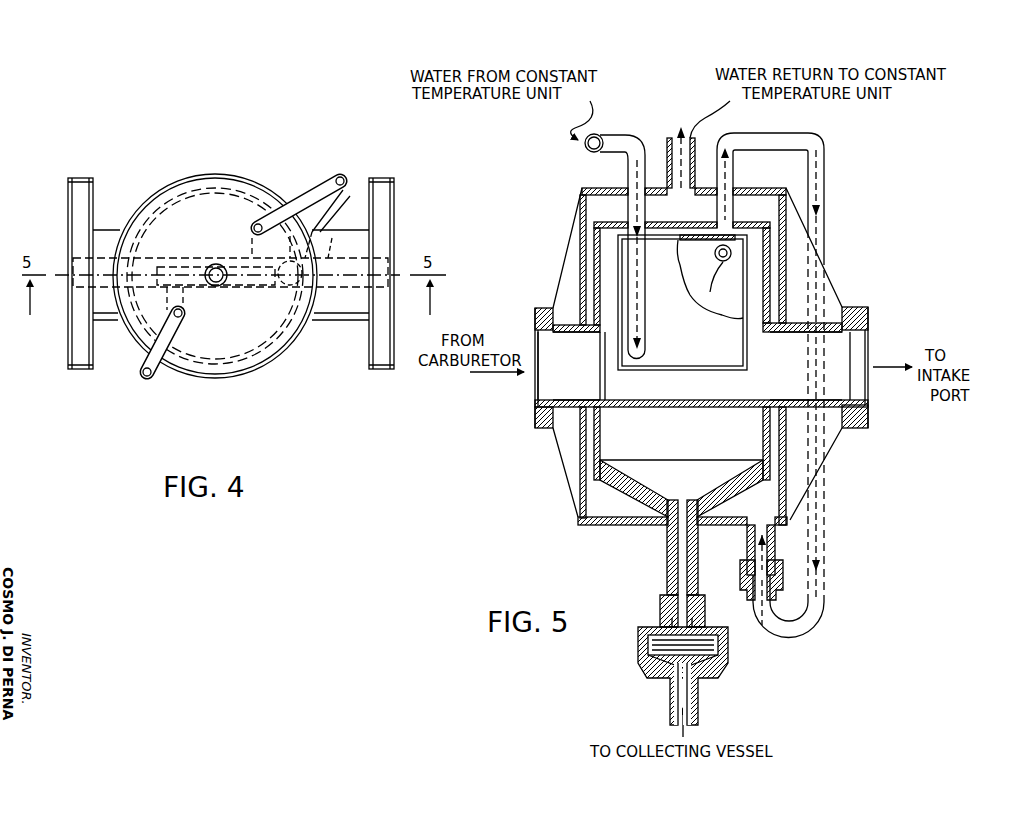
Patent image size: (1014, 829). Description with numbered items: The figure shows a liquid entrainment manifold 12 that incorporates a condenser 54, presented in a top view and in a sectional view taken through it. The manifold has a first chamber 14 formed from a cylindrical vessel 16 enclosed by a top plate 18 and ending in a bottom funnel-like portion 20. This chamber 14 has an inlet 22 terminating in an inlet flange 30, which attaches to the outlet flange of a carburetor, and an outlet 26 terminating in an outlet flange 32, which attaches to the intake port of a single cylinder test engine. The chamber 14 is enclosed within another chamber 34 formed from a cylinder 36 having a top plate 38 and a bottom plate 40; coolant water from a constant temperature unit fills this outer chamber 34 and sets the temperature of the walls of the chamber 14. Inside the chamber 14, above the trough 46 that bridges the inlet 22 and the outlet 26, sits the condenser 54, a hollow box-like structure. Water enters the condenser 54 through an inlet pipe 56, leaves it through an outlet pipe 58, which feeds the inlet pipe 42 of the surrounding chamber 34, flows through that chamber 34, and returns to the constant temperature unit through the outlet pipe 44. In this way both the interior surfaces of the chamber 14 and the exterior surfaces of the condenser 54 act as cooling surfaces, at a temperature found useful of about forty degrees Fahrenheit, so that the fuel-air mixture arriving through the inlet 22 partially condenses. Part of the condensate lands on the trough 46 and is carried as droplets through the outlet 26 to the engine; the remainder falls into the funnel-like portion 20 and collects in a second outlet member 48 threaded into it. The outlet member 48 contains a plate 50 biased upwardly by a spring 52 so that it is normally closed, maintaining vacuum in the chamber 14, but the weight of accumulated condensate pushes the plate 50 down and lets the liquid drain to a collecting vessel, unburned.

In FIG. 4, the liquid entrainment manifold 12 is at (205, 386).
In FIG. 5, the liquid entrainment manifold 12 is at (568, 519).
In FIG. 5, the first chamber 14 is at (703, 441).
In FIG. 4, the cylindrical vessel 16 is at (258, 190).
In FIG. 5, the cylindrical vessel 16 is at (600, 440).
In FIG. 5, the top plate 18 is at (683, 222).
In FIG. 5, the bottom funnel-like portion 20 is at (652, 496).
In FIG. 5, the inlet 22 is at (584, 371).
In FIG. 5, the outlet 26 is at (792, 371).
In FIG. 4, the inlet flange 30 is at (80, 370).
In FIG. 5, the inlet flange 30 is at (546, 428).
In FIG. 4, the outlet flange 32 is at (370, 372).
In FIG. 5, the outlet flange 32 is at (850, 429).
In FIG. 5, the chamber 34 is at (772, 215).
In FIG. 4, the cylinder 36 is at (226, 174).
In FIG. 4, the top plate 38 is at (262, 368).
In FIG. 5, the top plate 38 is at (745, 186).
In FIG. 5, the bottom plate 40 is at (630, 526).
In FIG. 4, the inlet pipe 42 is at (288, 285).
In FIG. 5, the inlet pipe 42 is at (747, 556).
In FIG. 4, the outlet pipe 44 is at (222, 286).
In FIG. 5, the outlet pipe 44 is at (667, 140).
In FIG. 4, the trough 46 is at (338, 236).
In FIG. 5, the trough 46 is at (668, 402).
In FIG. 5, the second outlet member 48 is at (667, 562).
In FIG. 5, the plate 50 is at (700, 637).
In FIG. 5, the spring 52 is at (668, 660).
In FIG. 4, the condenser 54 is at (199, 258).
In FIG. 5, the condenser 54 is at (716, 366).
In FIG. 4, the inlet pipe 56 is at (155, 378).
In FIG. 5, the inlet pipe 56 is at (615, 152).
In FIG. 4, the outlet pipe 58 is at (320, 183).
In FIG. 5, the outlet pipe 58 is at (824, 150).